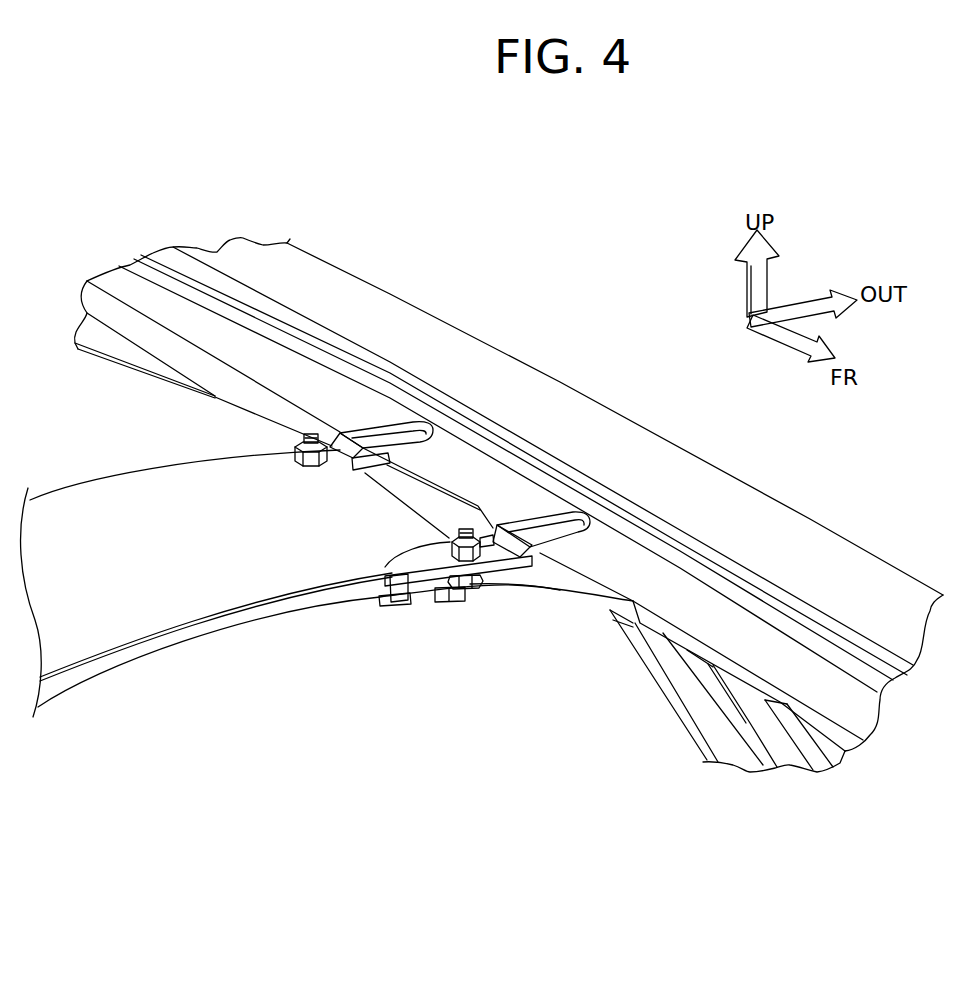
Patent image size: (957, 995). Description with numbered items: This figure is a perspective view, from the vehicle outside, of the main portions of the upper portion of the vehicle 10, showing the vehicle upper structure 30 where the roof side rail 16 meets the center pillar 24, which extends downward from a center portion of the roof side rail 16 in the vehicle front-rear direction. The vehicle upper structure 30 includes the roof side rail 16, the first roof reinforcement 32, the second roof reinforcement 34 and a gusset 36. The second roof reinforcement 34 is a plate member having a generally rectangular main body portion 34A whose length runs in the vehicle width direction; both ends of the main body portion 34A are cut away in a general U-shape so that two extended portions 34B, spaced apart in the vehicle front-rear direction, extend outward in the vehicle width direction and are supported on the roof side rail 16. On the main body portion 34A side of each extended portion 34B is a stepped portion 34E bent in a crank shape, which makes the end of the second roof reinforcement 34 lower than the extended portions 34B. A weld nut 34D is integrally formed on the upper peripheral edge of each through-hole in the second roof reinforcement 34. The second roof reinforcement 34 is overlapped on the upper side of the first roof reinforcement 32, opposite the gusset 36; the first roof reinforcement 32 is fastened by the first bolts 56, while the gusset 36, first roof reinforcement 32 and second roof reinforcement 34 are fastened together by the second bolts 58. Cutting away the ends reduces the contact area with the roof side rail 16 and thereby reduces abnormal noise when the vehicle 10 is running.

The vehicle 10 is at (586, 270).
The roof side rail 16 is at (800, 506).
The center pillar 24 is at (690, 739).
The vehicle upper structure 30 is at (463, 636).
The first roof reinforcement 32 is at (178, 652).
The second roof reinforcement 34 is at (109, 513).
The main body portion 34A is at (233, 576).
The extended portions 34B is at (562, 517).
The weld nut 34D is at (290, 448).
The stepped portion 34E is at (340, 421).
The gusset 36 is at (532, 602).
The first bolts 56 is at (436, 602).
The second bolts 58 is at (470, 590).